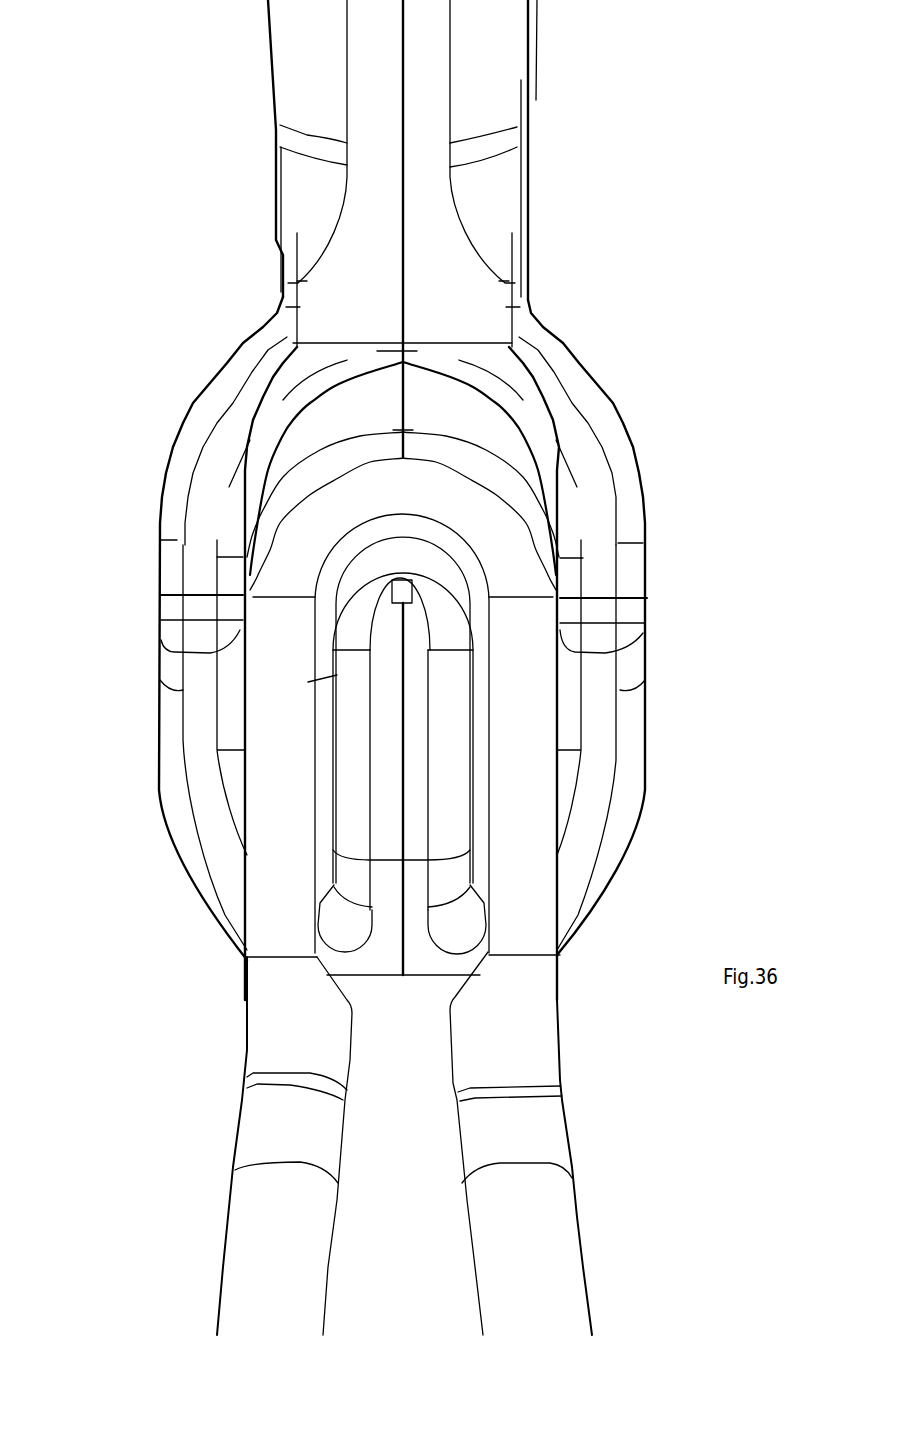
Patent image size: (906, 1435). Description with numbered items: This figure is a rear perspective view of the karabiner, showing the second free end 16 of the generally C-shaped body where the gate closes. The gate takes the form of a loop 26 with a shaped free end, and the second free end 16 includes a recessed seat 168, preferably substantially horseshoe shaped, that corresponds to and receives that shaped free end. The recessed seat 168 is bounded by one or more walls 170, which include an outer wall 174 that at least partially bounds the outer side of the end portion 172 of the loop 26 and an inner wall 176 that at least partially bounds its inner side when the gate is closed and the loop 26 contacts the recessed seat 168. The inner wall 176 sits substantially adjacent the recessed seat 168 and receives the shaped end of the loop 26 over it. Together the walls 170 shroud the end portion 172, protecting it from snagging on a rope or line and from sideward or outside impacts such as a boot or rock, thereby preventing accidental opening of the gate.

The second free end 16 is at (618, 338).
The loop 26 is at (620, 1027).
The recessed seat 168 is at (514, 462).
The walls 170 is at (231, 460).
The end portion 172 is at (497, 528).
The outer wall 174 is at (200, 575).
The inner wall 176 is at (453, 745).